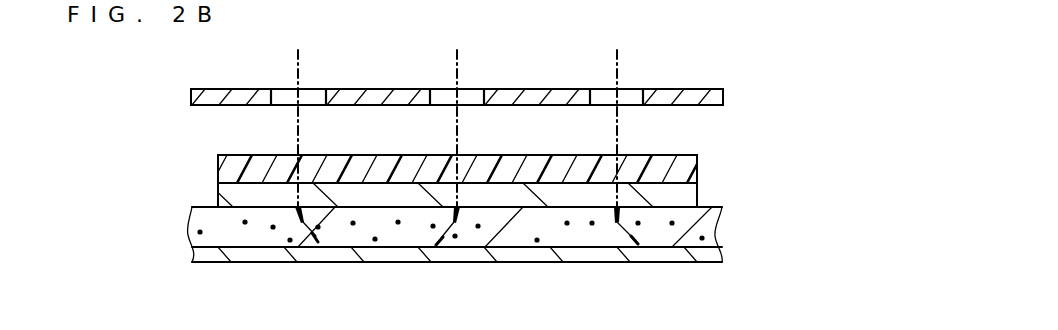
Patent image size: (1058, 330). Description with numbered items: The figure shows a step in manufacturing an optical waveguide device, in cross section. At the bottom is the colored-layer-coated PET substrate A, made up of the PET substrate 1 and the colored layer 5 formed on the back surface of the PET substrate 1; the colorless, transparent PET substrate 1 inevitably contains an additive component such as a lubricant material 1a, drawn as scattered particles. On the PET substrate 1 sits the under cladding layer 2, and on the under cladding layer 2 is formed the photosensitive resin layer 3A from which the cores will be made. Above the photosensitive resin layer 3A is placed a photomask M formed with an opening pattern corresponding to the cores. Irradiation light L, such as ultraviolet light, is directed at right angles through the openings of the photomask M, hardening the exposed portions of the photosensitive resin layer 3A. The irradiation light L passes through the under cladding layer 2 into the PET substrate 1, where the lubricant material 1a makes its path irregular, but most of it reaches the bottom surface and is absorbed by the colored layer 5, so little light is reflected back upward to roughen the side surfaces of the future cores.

The photomask M is at (723, 95).
The irradiation light L is at (458, 62).
The photosensitive resin layer 3A is at (683, 172).
The under cladding layer 2 is at (683, 196).
The PET substrate 1 is at (458, 234).
The lubricant material 1a is at (200, 232).
The colored layer 5 is at (487, 259).
The colored-layer-coated PET substrate A is at (485, 239).